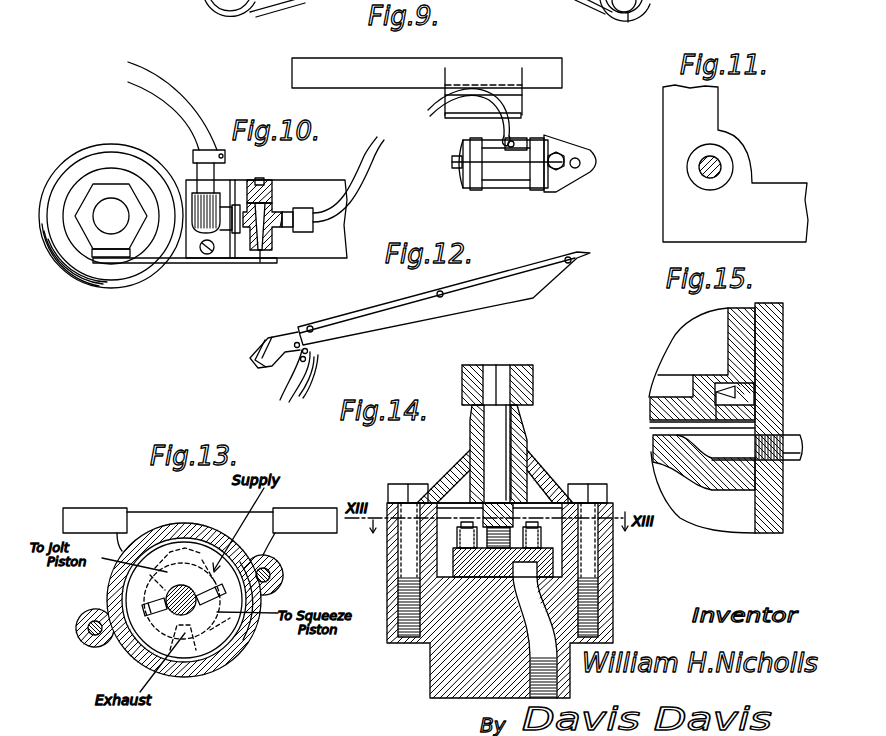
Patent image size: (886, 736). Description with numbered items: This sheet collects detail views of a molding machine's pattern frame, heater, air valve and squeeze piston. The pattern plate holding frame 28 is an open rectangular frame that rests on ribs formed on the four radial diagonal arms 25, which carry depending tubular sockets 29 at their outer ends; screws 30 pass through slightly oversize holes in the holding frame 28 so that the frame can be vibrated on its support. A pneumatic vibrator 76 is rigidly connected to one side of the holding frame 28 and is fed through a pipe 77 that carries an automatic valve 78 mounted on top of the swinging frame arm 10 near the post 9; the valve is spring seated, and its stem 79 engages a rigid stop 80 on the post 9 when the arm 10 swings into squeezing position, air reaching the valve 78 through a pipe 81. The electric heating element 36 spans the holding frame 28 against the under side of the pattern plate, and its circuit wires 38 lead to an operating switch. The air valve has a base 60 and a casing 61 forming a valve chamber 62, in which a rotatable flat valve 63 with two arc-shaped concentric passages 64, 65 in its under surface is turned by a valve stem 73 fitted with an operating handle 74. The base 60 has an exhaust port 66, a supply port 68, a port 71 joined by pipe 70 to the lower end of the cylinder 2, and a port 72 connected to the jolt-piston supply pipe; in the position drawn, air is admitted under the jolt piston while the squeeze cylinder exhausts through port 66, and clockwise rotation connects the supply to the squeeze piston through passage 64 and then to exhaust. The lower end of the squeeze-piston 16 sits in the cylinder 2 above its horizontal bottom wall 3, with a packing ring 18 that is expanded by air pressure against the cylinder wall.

In FIG. 15, the vertical cylinder 2 is at (770, 340).
In FIG. 15, the horizontal wall 3 is at (653, 440).
In FIG. 10, the post 9 is at (111, 216).
In FIG. 10, the frame arm 10 is at (312, 255).
In FIG. 15, the squeeze-piston 16 is at (728, 326).
In FIG. 15, the packing ring 18 is at (740, 392).
In FIG. 9, the radial diagonal arms 25 is at (278, 0).
In FIG. 9, the pattern plate holding frame 28 is at (314, 64).
In FIG. 11, the pattern plate holding frame 28 is at (663, 110).
In FIG. 9, the tubular sockets 29 is at (630, 18).
In FIG. 11, the screws 30 is at (699, 167).
In FIG. 12, the heating element 36 is at (384, 309).
In FIG. 12, the circuit wires 38 is at (297, 397).
In FIG. 14, the base 60 is at (514, 600).
In FIG. 14, the casing 61 is at (441, 474).
In FIG. 13, the casing 61 is at (108, 583).
In FIG. 14, the valve chamber 62 is at (540, 490).
In FIG. 13, the valve chamber 62 is at (126, 646).
In FIG. 14, the rotatable flat valve 63 is at (437, 574).
In FIG. 13, the rotatable flat valve 63 is at (137, 598).
In FIG. 13, the arc-shape passage 64 is at (191, 543).
In FIG. 14, the arc-shape passage 65 is at (600, 597).
In FIG. 13, the arc-shape passage 65 is at (218, 657).
In FIG. 13, the exhaust port 66 is at (181, 658).
In FIG. 13, the supply port 68 is at (216, 545).
In FIG. 15, the pipe 70 is at (792, 462).
In FIG. 13, the port 71 is at (249, 647).
In FIG. 13, the port 72 is at (157, 550).
In FIG. 14, the valve stem 73 is at (488, 437).
In FIG. 14, the operating handle 74 is at (533, 367).
In FIG. 9, the pneumatic vibrator 76 is at (528, 137).
In FIG. 9, the pipe 77 is at (425, 103).
In FIG. 10, the pipe 77 is at (357, 160).
In FIG. 10, the automatic valve 78 is at (272, 200).
In FIG. 10, the stem 79 is at (260, 264).
In FIG. 10, the rigid stop 80 is at (216, 264).
In FIG. 10, the pipe 81 is at (152, 78).